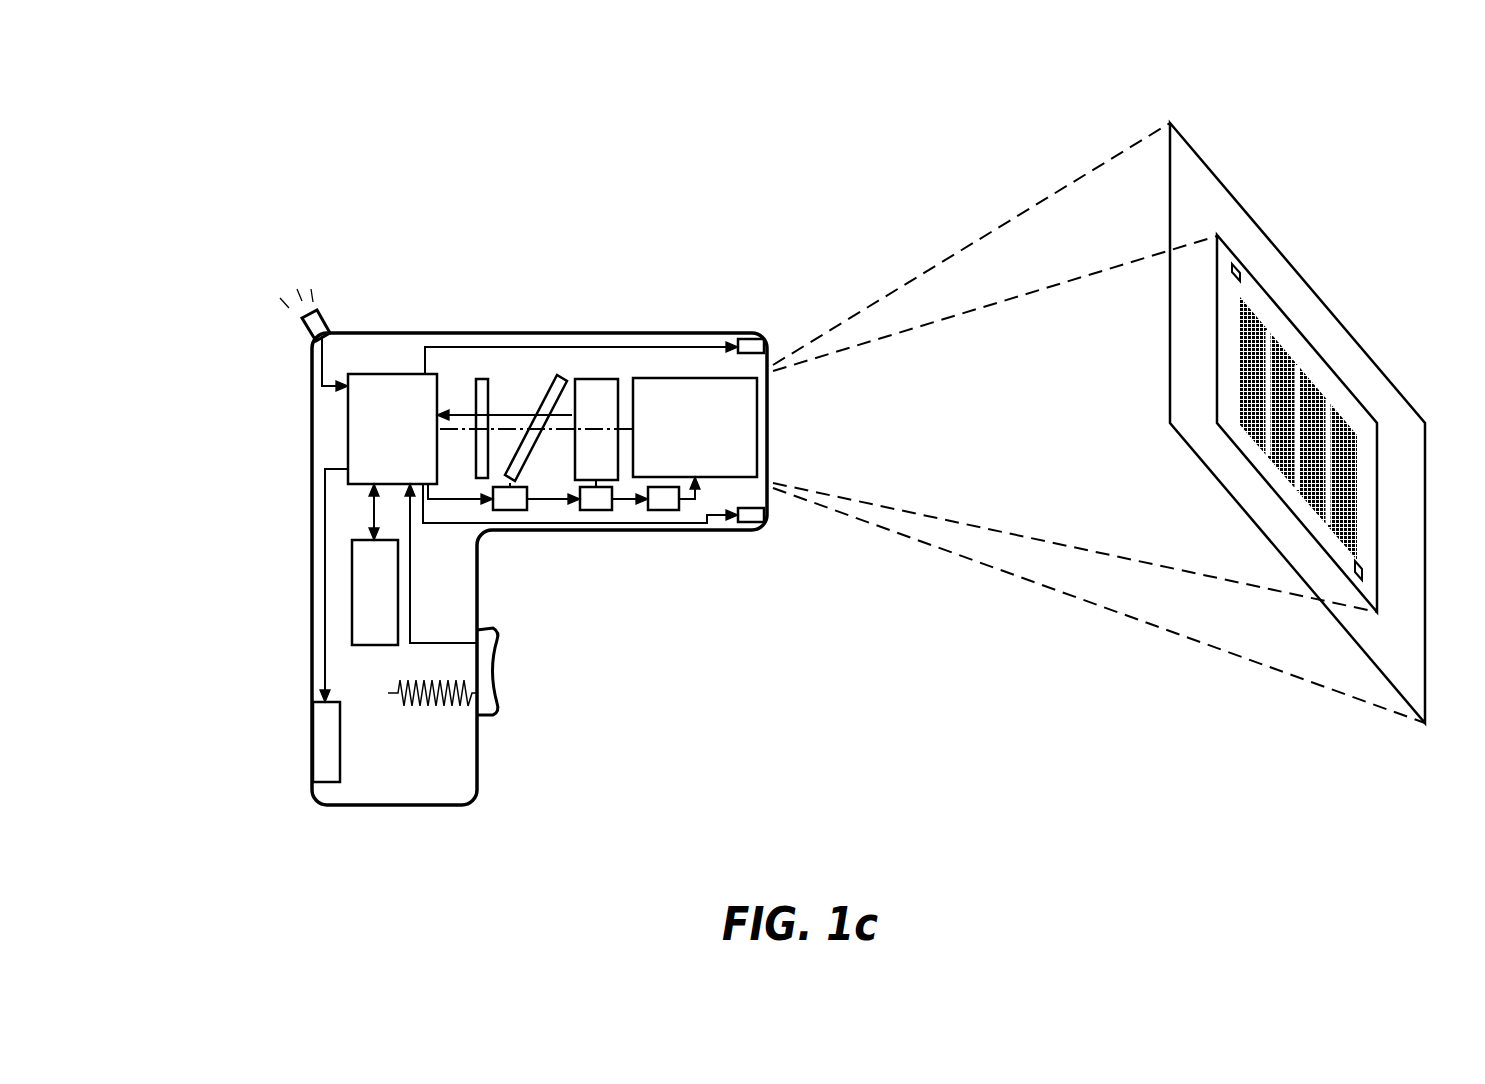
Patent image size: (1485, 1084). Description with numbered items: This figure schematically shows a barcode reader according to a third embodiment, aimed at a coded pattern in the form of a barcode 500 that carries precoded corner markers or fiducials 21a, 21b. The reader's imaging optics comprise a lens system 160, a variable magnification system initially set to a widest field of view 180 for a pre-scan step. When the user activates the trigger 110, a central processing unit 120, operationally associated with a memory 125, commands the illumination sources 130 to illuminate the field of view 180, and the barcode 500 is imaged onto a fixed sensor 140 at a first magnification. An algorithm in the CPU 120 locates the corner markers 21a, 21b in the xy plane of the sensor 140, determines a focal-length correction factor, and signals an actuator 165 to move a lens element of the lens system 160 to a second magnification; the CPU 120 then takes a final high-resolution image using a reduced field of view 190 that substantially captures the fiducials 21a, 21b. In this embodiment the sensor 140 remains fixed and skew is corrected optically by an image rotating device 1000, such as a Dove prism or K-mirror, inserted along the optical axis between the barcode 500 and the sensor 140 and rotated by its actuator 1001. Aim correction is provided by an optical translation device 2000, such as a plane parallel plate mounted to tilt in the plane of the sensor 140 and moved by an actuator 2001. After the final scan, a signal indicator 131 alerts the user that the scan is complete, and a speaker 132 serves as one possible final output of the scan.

The trigger 110 is at (497, 705).
The central processing unit 120 is at (347, 423).
The memory 125 is at (352, 575).
The illumination sources 130 is at (782, 575).
The signal indicator 131 is at (303, 335).
The speaker 132 is at (312, 737).
The sensor 140 is at (478, 379).
The lens system 160 is at (688, 378).
The actuator 165 is at (672, 510).
The widest field of view 180 is at (945, 248).
The reduced field of view 190 is at (958, 330).
The barcode 500 is at (1280, 330).
The image rotating device 1000 is at (597, 379).
The actuator 1001 is at (597, 510).
The optical translation device 2000 is at (542, 402).
The actuator 2001 is at (510, 510).
The corner marker 21a is at (1231, 262).
The corner marker 21b is at (1363, 571).